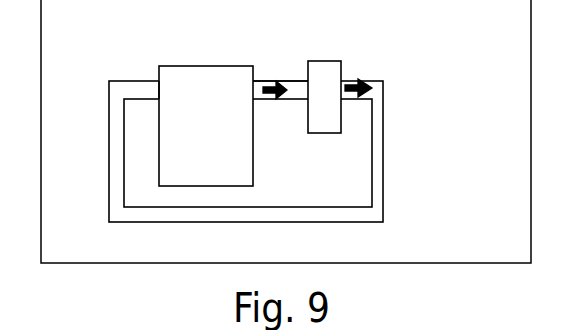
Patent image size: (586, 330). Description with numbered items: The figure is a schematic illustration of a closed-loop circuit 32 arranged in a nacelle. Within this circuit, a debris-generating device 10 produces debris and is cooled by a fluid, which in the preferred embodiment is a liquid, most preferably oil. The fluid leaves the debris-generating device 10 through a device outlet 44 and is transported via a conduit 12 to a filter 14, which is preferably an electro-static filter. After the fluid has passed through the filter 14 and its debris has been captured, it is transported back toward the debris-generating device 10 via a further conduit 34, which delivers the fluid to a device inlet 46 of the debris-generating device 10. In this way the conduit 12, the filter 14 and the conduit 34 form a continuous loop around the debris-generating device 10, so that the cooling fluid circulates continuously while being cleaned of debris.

The debris-generating device 10 is at (227, 77).
The conduit 12 is at (298, 90).
The filter 14 is at (329, 76).
The closed-loop circuit 32 is at (400, 65).
The conduit 34 is at (373, 142).
The device outlet 44 is at (261, 79).
The device inlet 46 is at (158, 81).